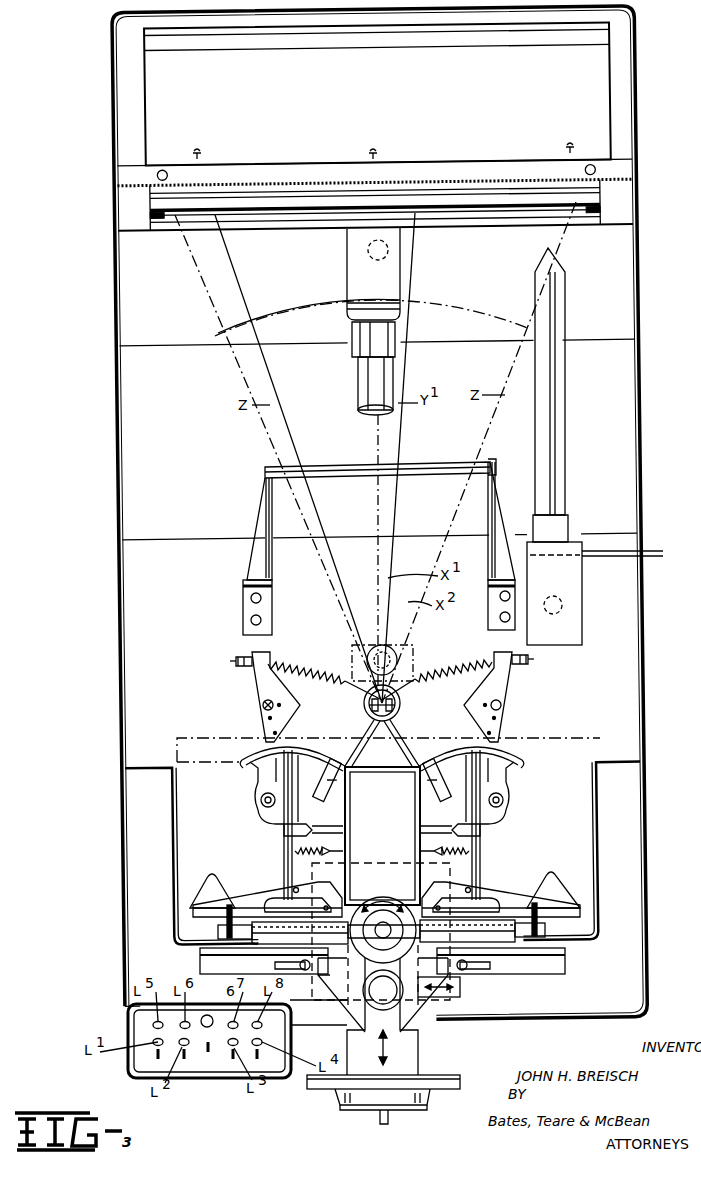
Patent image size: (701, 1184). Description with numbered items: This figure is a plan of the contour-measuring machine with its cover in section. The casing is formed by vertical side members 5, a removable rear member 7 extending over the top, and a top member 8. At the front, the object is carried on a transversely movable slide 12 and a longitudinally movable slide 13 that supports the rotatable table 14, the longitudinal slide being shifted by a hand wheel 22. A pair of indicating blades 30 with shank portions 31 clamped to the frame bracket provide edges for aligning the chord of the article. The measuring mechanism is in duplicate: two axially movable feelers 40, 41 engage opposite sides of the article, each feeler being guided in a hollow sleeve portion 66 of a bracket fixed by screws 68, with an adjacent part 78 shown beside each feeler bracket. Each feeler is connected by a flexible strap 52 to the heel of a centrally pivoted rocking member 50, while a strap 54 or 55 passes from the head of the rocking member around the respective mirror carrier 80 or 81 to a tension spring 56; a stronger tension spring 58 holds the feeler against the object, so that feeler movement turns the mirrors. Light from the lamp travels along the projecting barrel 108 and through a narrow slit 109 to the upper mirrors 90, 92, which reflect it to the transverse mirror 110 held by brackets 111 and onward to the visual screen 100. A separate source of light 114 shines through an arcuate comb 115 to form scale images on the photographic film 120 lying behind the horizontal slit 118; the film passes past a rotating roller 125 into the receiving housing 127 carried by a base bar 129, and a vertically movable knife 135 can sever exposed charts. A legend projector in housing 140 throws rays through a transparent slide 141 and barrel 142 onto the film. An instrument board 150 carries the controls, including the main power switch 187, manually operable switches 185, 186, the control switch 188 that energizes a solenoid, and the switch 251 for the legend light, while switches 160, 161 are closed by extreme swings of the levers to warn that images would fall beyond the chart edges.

The vertical side members 5 is at (114, 432).
The rear member 7 is at (113, 78).
The top member 8 is at (642, 693).
The transversely movable slide 12 is at (460, 987).
The longitudinally movable slide 13 is at (413, 1052).
The rotatable table 14 is at (385, 893).
The hand wheel 22 is at (366, 1110).
The indicating blades 30 is at (352, 1020).
The shank portions 31 is at (200, 965).
The feeler 40 is at (398, 906).
The feeler 41 is at (246, 936).
The rocking member 50 is at (284, 857).
The flexible strap 52 is at (246, 902).
The strap 54 is at (382, 836).
The strap 55 is at (382, 745).
The tension spring 56 is at (317, 664).
The tension spring 58 is at (343, 849).
The hollow sleeve portion 66 is at (515, 940).
The screws 68 is at (260, 798).
The wedge 78 is at (213, 877).
The mirror carrier 80 is at (400, 700).
The mirror carrier 81 is at (368, 702).
The mirror 90 is at (400, 713).
The mirror 92 is at (366, 712).
The visual screen 100 is at (600, 738).
The projecting barrel 108 is at (400, 280).
The narrow slit 109 is at (376, 412).
The transverse mirror 110 is at (430, 467).
The brackets 111 is at (258, 512).
The source of light 114 is at (352, 648).
The arcuate comb 115 is at (480, 322).
The horizontal slit 118 is at (295, 212).
The photographic film 120 is at (520, 208).
The roller 125 is at (476, 205).
The receiving housing 127 is at (377, 93).
The base bar 129 is at (288, 162).
The knife 135 is at (403, 166).
The projection lamp housing 140 is at (582, 636).
The transparent slide 141 is at (605, 557).
The barrel 142 is at (556, 400).
The instrument board 150 is at (128, 1016).
The switch 160 is at (322, 786).
The switch 161 is at (446, 786).
The manually operable switch 185 is at (232, 1052).
The manually operable switch 186 is at (258, 1048).
The main power switch 187 is at (158, 1050).
The control switch 188 is at (208, 1046).
The switch 251 is at (184, 1052).